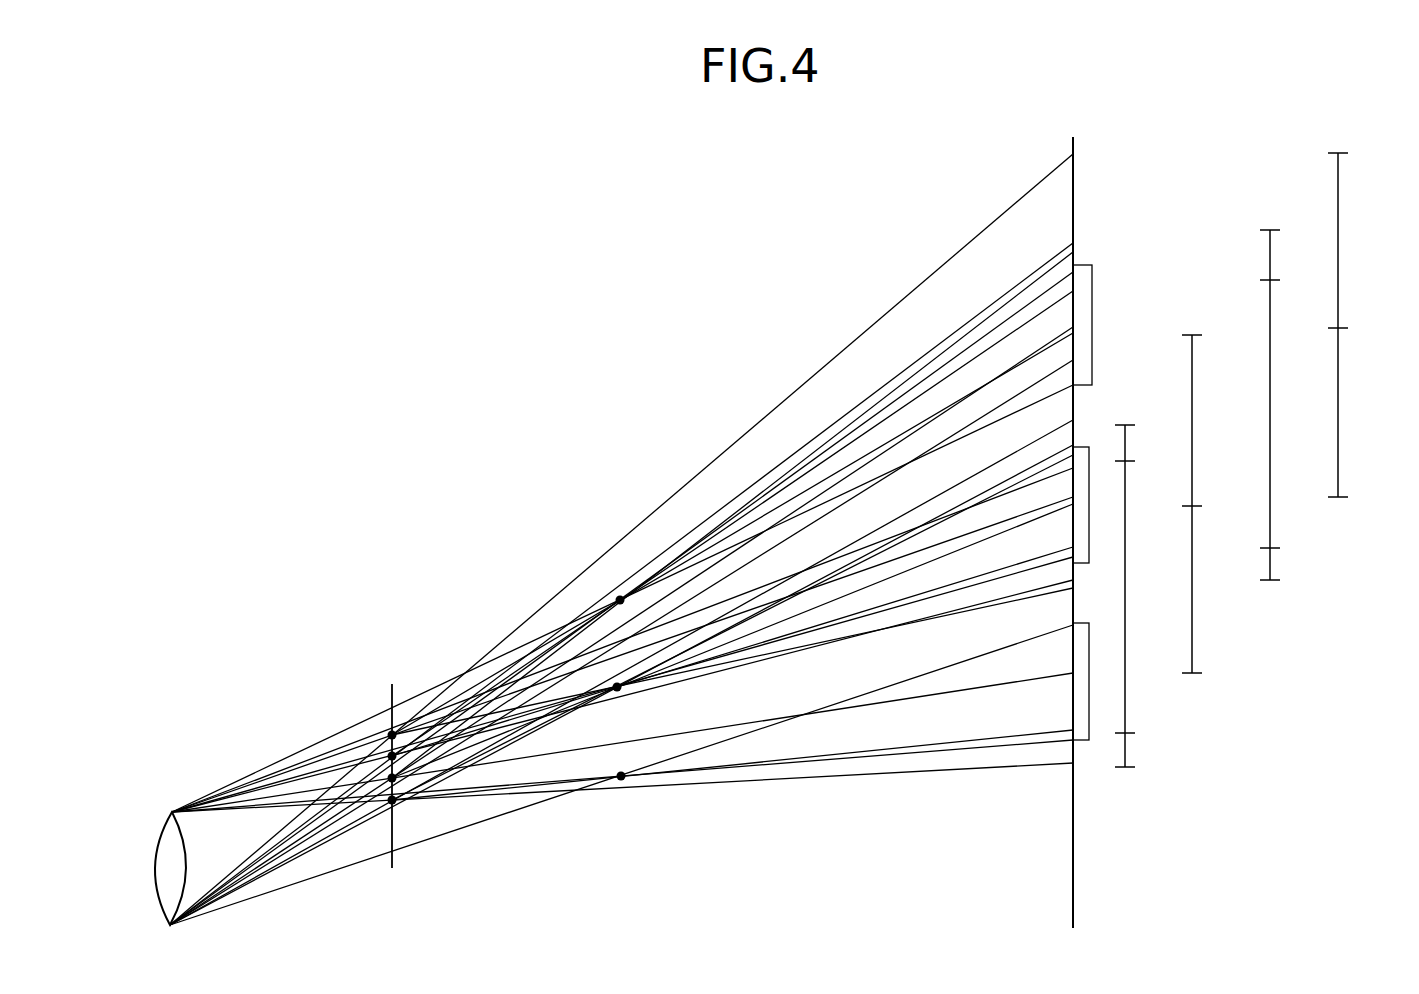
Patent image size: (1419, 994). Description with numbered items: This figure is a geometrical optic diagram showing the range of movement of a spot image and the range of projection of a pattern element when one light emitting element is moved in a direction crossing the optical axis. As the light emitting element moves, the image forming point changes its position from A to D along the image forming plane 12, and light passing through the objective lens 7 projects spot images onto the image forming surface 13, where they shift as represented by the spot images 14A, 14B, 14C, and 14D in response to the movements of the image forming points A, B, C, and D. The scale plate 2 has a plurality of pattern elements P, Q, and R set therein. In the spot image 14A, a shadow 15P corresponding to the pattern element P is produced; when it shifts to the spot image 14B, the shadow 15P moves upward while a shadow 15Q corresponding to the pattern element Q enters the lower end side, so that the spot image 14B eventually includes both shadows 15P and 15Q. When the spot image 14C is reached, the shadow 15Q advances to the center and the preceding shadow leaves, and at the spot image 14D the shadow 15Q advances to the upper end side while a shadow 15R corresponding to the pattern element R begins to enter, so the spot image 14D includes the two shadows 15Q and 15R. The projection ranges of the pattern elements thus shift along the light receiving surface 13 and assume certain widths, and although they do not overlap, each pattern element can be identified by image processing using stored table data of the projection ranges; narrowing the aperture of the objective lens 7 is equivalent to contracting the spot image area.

The scale plate 2 is at (665, 477).
The objective lens 7 is at (167, 868).
The image forming plane 12 is at (385, 684).
The image forming surface 13 is at (1073, 154).
The spot image 14A is at (1340, 462).
The spot image 14B is at (1272, 541).
The spot image 14C is at (1194, 626).
The spot image 14D is at (1127, 698).
The shadow 15P is at (1329, 304).
The shadow 15Q is at (1227, 523).
The shadow 15R is at (1152, 745).